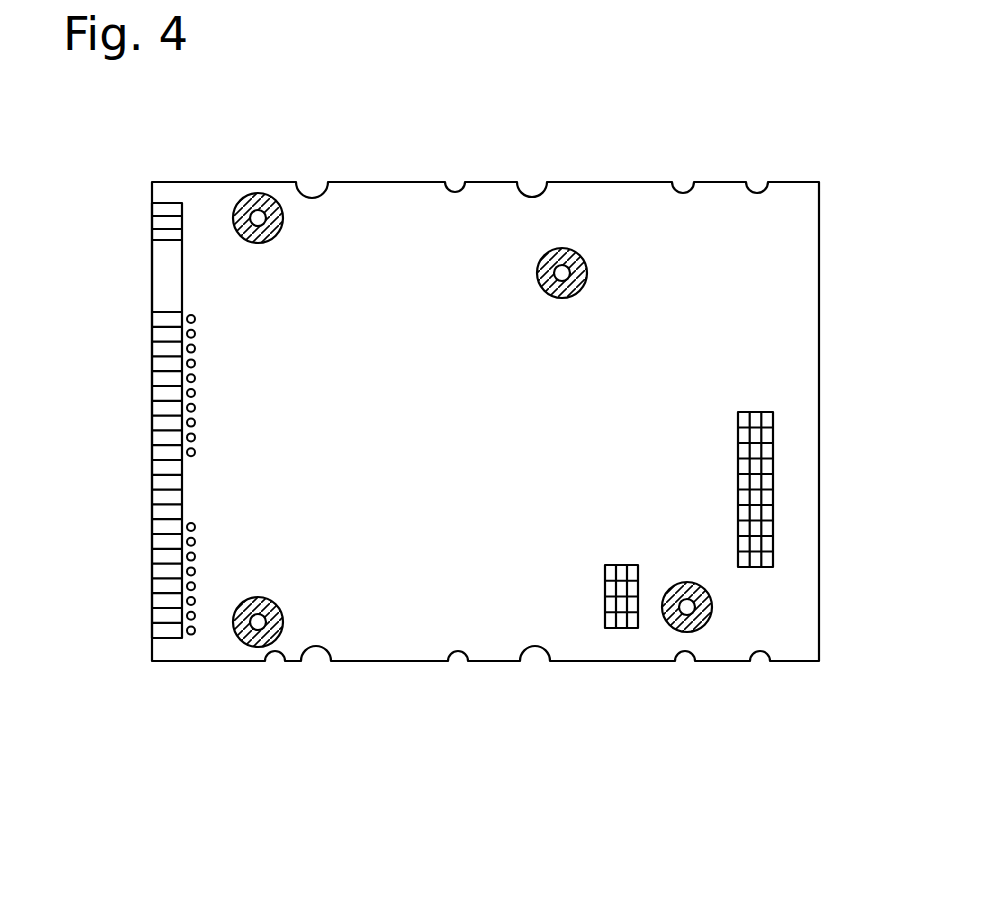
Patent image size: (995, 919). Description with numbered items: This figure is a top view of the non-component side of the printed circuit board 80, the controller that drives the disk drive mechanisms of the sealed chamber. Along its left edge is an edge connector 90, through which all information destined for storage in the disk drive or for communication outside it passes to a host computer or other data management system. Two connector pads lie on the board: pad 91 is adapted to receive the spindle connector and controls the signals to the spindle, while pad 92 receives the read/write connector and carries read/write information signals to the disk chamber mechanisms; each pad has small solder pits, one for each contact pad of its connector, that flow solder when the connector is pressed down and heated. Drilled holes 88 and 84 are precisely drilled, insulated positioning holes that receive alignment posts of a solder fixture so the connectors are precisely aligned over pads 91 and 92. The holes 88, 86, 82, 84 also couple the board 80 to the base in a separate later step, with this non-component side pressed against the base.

The printed circuit board 80 is at (500, 170).
The hole 82 is at (580, 255).
The alignment hole 84 is at (700, 630).
The hole 86 is at (242, 642).
The alignment hole 88 is at (276, 200).
The edge connector 90 is at (162, 435).
The connector pad 91 is at (615, 630).
The connector pad 92 is at (772, 500).